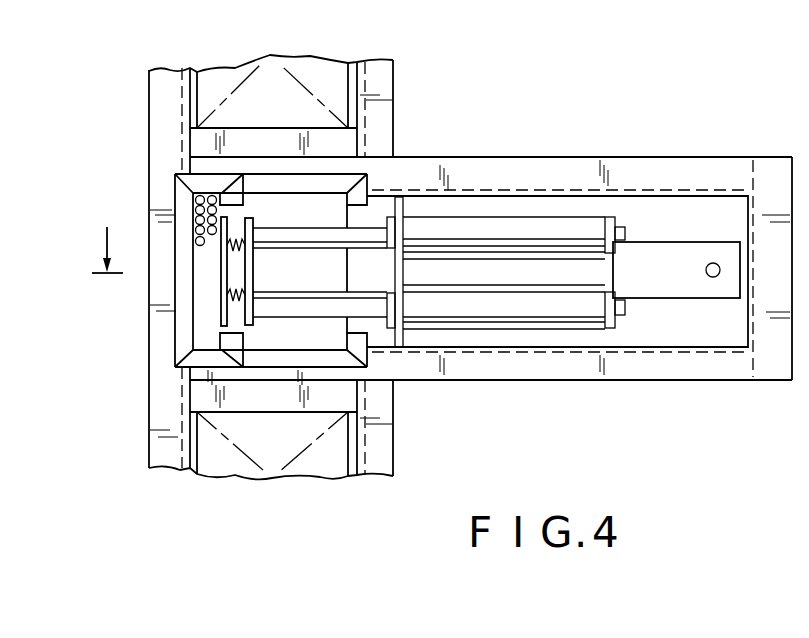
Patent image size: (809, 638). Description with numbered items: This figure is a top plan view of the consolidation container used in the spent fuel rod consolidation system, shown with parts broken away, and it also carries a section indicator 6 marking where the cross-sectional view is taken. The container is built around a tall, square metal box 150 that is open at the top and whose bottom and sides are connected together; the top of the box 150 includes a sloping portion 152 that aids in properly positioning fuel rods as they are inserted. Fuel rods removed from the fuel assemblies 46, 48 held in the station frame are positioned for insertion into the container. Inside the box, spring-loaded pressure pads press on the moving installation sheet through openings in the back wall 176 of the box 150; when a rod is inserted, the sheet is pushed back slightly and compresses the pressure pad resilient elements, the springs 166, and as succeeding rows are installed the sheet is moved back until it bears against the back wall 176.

The fuel assembly 46 is at (227, 78).
The fuel assembly 48 is at (218, 458).
The box 150 is at (372, 173).
The sloping portion 152 is at (183, 336).
The springs 166 is at (232, 238).
The back wall 176 is at (352, 337).
The section view 6 direction arrow 6 is at (107, 229).